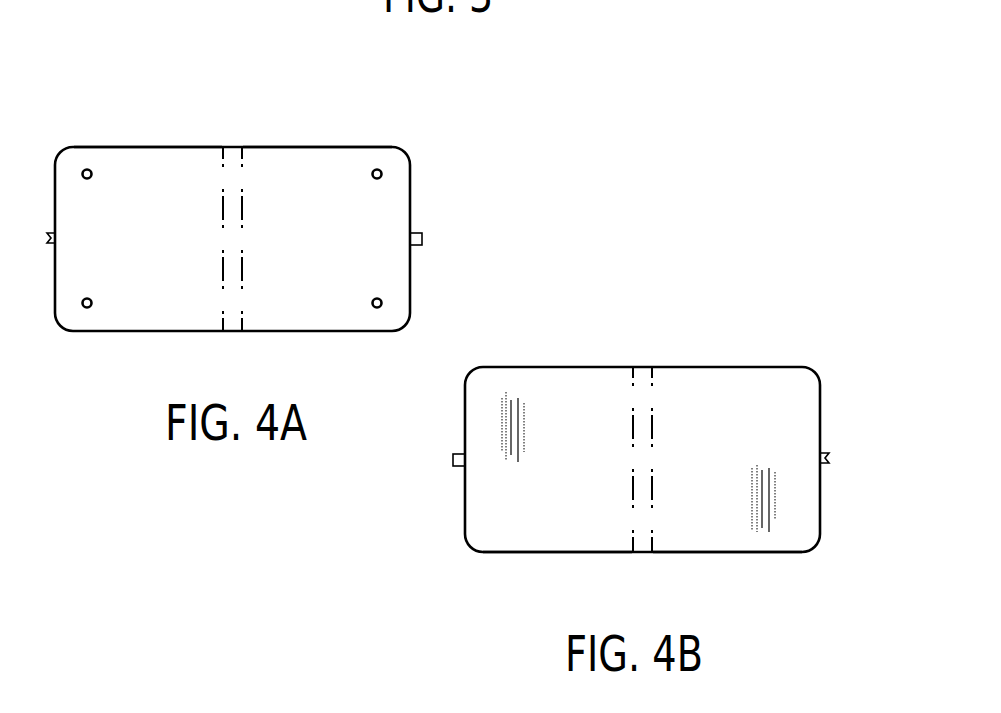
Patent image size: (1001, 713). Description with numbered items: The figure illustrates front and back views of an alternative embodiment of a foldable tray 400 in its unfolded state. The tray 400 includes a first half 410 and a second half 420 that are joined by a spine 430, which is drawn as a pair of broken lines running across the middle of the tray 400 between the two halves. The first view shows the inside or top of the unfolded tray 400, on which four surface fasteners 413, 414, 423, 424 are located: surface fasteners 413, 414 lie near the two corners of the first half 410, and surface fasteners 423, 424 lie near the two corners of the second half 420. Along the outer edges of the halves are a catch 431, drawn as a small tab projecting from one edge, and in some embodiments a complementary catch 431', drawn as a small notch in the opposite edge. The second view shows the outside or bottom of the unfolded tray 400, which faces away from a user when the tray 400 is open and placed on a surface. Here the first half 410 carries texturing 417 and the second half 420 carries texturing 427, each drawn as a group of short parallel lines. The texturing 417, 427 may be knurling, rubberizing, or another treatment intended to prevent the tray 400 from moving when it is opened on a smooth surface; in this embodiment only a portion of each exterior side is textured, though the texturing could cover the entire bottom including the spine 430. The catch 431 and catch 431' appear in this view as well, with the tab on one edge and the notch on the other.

In FIG. 4A, the tray 400 is at (136, 52).
In FIG. 4A, the first half 410 is at (129, 147).
In FIG. 4B, the first half 410 is at (728, 553).
In FIG. 4A, the second half 420 is at (361, 147).
In FIG. 4B, the second half 420 is at (556, 553).
In FIG. 4A, the spine 430 is at (236, 147).
In FIG. 4B, the spine 430 is at (645, 367).
In FIG. 4A, the surface fastener 413 is at (85, 172).
In FIG. 4A, the surface fastener 414 is at (89, 308).
In FIG. 4A, the surface fastener 423 is at (383, 174).
In FIG. 4A, the surface fastener 424 is at (383, 303).
In FIG. 4A, the catch 431 is at (456, 241).
In FIG. 4B, the catch 431 is at (418, 458).
In FIG. 4A, the catch 431' is at (52, 308).
In FIG. 4B, the catch 431' is at (833, 523).
In FIG. 4B, the texturing 427 is at (518, 400).
In FIG. 4B, the texturing 417 is at (757, 530).